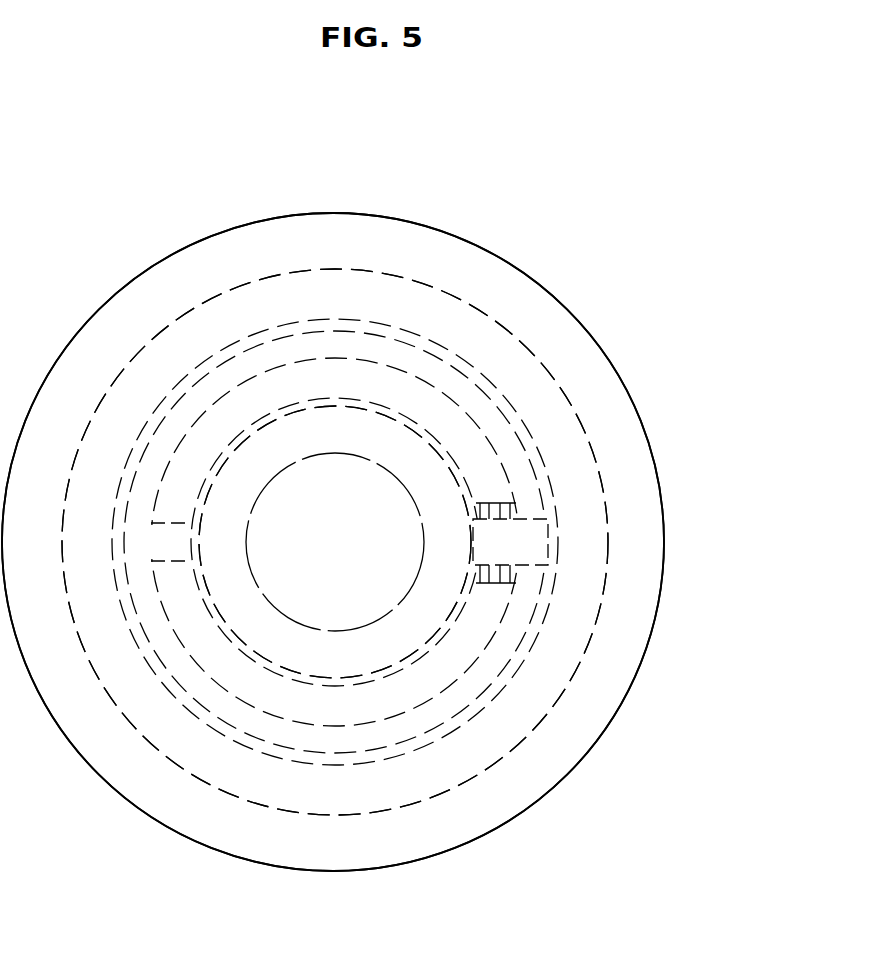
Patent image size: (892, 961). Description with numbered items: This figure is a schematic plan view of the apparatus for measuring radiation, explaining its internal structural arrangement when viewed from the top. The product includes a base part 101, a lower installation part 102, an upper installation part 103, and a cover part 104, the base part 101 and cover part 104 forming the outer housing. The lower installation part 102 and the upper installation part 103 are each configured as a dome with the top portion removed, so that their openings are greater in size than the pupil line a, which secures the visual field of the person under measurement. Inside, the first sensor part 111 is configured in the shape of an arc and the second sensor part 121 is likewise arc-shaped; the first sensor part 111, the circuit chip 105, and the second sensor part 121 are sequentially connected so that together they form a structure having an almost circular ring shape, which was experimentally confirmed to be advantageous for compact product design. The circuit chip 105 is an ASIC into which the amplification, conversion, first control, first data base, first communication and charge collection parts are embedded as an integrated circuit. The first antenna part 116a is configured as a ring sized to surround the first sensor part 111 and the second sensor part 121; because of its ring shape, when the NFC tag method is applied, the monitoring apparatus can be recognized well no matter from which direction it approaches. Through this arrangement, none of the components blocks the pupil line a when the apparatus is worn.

The base part 101 is at (543, 277).
The cover part 104 is at (333, 542).
The lower installation part 102 is at (390, 415).
The upper installation part 103 is at (335, 542).
The first sensor part 111 is at (400, 368).
The second sensor part 121 is at (420, 705).
The first antenna part 116a is at (540, 450).
The circuit chip 105 is at (548, 538).
The pupil line a is at (253, 503).